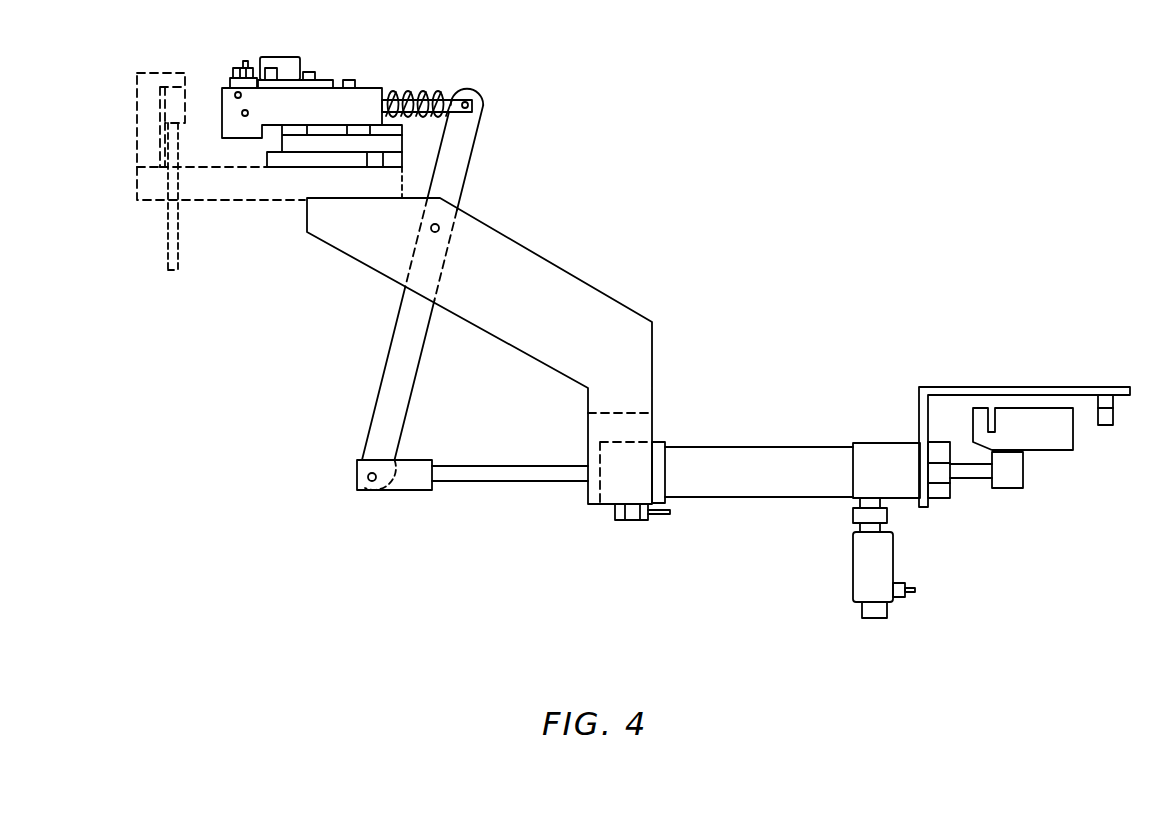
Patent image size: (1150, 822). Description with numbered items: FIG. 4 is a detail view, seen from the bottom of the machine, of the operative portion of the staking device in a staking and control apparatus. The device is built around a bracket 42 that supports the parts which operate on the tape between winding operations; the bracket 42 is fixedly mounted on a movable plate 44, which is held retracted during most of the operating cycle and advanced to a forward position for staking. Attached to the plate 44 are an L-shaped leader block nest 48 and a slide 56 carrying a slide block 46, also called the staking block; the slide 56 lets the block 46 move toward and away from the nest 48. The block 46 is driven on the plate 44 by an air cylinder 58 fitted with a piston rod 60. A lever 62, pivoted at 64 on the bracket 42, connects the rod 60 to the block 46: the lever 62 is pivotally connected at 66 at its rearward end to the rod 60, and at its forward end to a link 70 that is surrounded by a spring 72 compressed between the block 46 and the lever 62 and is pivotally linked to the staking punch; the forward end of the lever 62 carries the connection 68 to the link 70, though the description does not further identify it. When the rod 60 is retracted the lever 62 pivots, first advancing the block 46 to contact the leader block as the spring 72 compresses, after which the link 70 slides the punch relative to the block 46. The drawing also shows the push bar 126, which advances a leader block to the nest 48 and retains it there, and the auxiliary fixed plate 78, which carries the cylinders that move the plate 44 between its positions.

The bracket 42 is at (597, 297).
The movable plate 44 is at (137, 180).
The slide block 46 is at (345, 98).
The leader block nest 48 is at (137, 109).
The slide 56 is at (375, 141).
The air cylinder 58 is at (770, 432).
The piston rod 60 is at (521, 467).
The lever 62 is at (372, 427).
The pivot 64 is at (440, 226).
The pivotal connection 66 is at (371, 476).
The pin hole 68 is at (468, 104).
The link 70 is at (442, 100).
The spring 72 is at (410, 88).
The auxiliary fixed plate 78 is at (244, 64).
The push bar 126 is at (168, 252).